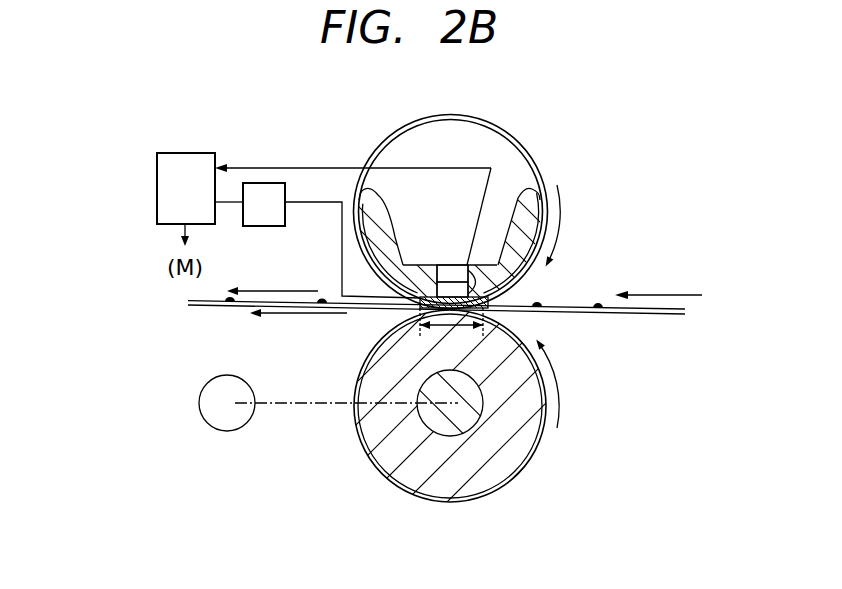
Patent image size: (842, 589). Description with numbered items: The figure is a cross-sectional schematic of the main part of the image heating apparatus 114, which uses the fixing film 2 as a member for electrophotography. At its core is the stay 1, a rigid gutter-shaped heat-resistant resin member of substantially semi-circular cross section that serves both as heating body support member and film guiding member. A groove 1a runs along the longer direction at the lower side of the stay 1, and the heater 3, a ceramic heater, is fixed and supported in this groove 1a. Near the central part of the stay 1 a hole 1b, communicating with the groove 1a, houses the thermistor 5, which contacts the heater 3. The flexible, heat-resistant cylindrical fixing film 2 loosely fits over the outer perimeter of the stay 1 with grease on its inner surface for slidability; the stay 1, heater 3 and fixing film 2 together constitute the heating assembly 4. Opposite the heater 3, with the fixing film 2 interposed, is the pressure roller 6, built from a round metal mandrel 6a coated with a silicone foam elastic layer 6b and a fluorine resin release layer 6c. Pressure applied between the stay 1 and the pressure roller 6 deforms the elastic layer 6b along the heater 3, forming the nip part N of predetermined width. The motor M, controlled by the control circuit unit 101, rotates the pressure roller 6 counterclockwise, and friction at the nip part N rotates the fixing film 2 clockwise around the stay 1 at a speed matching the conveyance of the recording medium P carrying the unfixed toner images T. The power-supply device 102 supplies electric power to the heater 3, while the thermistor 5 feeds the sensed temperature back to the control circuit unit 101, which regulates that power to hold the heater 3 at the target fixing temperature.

The stay 1 is at (521, 211).
The groove 1a is at (472, 290).
The hole 1b is at (437, 280).
The fixing film 2 is at (528, 153).
The heater 3 is at (446, 292).
The heating assembly 4 is at (494, 110).
The thermistor 5 is at (457, 292).
The pressure roller 6 is at (350, 456).
The mandrel 6a is at (472, 411).
The elastic layer 6b is at (478, 472).
The release layer 6c is at (435, 501).
The control circuit unit 101 is at (186, 160).
The power-supply device 102 is at (262, 217).
The image heating apparatus 114 is at (572, 157).
The motor M is at (222, 418).
The nip part N is at (446, 330).
The recording medium P is at (665, 314).
The toner image T is at (545, 304).